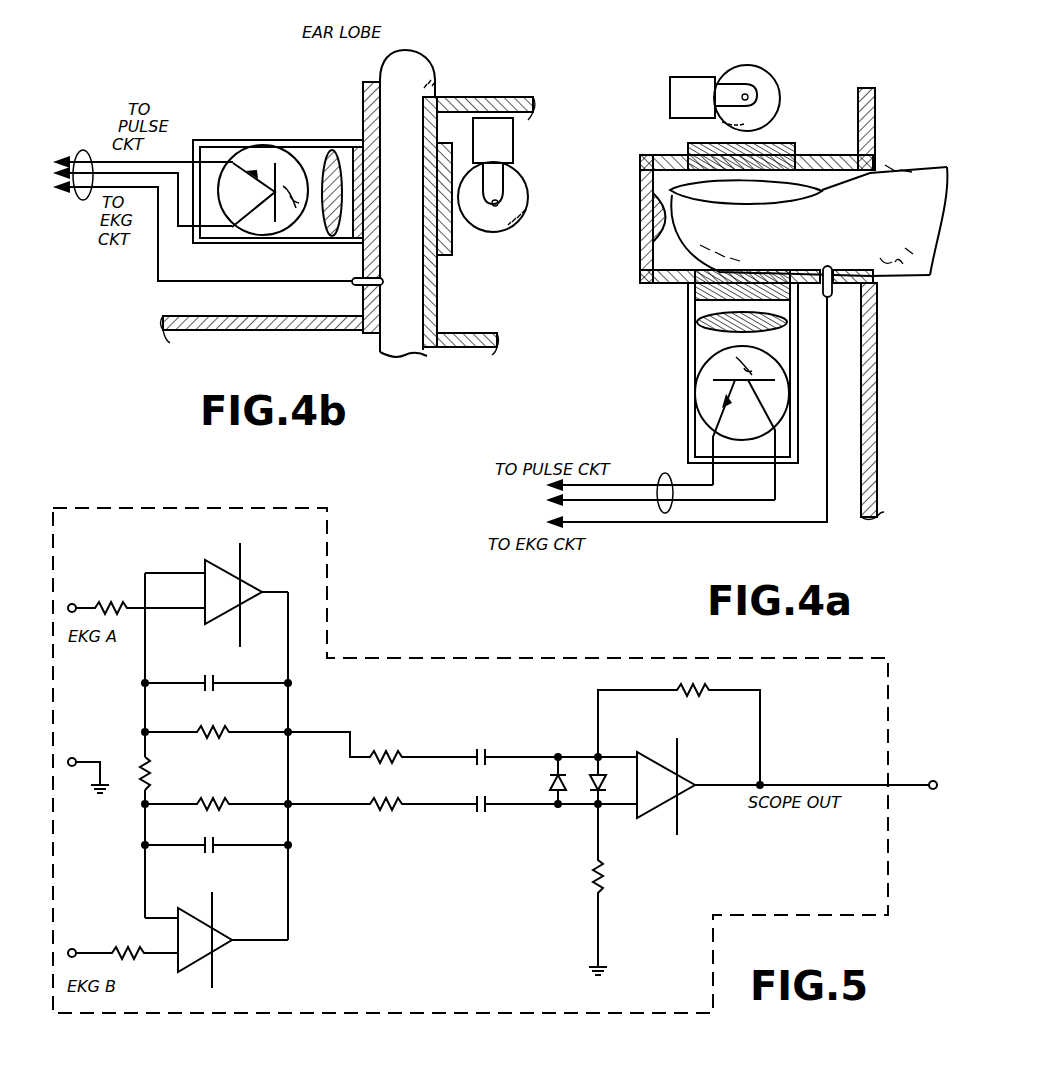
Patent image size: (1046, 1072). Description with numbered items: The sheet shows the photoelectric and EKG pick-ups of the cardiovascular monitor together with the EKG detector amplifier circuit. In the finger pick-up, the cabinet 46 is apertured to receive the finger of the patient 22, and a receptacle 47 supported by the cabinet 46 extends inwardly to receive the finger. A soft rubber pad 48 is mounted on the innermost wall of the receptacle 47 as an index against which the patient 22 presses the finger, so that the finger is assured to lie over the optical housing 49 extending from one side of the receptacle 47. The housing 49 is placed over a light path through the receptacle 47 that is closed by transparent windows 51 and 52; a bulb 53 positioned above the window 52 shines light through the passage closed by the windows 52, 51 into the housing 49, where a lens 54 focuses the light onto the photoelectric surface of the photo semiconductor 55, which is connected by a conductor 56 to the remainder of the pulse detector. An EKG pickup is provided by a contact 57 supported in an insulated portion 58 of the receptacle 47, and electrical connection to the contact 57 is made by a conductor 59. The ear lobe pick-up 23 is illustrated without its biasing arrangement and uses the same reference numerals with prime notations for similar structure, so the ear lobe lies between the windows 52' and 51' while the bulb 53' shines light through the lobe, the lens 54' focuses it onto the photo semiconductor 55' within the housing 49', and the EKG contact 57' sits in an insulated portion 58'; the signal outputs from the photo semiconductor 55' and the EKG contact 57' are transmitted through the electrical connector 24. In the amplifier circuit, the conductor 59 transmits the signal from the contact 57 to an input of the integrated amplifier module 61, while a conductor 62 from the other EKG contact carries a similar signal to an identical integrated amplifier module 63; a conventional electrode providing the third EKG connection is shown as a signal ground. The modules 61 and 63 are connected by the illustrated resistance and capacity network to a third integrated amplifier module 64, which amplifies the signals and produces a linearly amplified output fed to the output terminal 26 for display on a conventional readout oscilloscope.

In FIG. 4b, the patient 22 is at (384, 62).
In FIG. 4a, the patient 22 is at (910, 172).
In FIG. 4b, the ear pick-up 23 is at (452, 58).
In FIG. 4b, the electrical connector 24 is at (83, 150).
In FIG. 4a, the cabinet 46 is at (873, 142).
In FIG. 4a, the receptacle 47 is at (657, 284).
In FIG. 4a, the soft rubber pad 48 is at (675, 225).
In FIG. 4a, the optical housing 49 is at (720, 393).
In FIG. 4b, the optical housing 49' is at (249, 174).
In FIG. 4a, the transparent window 51 is at (726, 296).
In FIG. 4b, the transparent window 51' is at (349, 176).
In FIG. 4a, the transparent window 52 is at (755, 140).
In FIG. 4b, the transparent window 52' is at (466, 209).
In FIG. 4a, the bulb 53 is at (738, 87).
In FIG. 4b, the bulb 53' is at (513, 175).
In FIG. 4a, the lens 54 is at (722, 333).
In FIG. 4b, the lens 54' is at (317, 175).
In FIG. 4a, the photo semiconductor 55 is at (713, 428).
In FIG. 4b, the photo semiconductor 55' is at (265, 170).
In FIG. 4a, the conductor 56 is at (663, 477).
In FIG. 4a, the contact 57 is at (706, 406).
In FIG. 4b, the EKG contact 57' is at (207, 250).
In FIG. 4a, the insulated portion 58 is at (816, 293).
In FIG. 4b, the insulated portion 58' is at (350, 268).
In FIG. 4a, the electrical conductor 59 is at (782, 523).
In FIG. 5, the electrical conductor 59 is at (90, 603).
In FIG. 5, the integrated amplifier module 61 is at (243, 580).
In FIG. 5, the conductor 62 is at (93, 946).
In FIG. 5, the integrated amplifier module 63 is at (183, 908).
In FIG. 5, the third integrated amplifier module 64 is at (690, 790).
In FIG. 5, the output terminal 26 is at (931, 782).